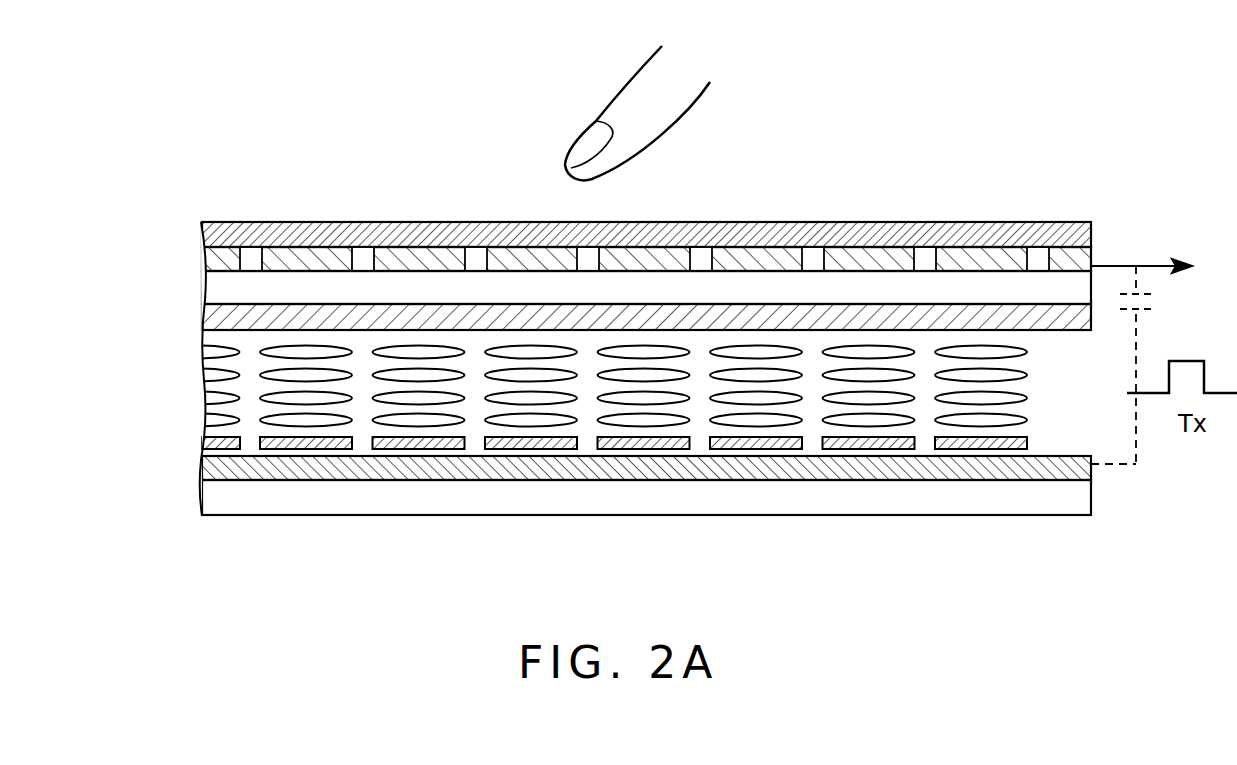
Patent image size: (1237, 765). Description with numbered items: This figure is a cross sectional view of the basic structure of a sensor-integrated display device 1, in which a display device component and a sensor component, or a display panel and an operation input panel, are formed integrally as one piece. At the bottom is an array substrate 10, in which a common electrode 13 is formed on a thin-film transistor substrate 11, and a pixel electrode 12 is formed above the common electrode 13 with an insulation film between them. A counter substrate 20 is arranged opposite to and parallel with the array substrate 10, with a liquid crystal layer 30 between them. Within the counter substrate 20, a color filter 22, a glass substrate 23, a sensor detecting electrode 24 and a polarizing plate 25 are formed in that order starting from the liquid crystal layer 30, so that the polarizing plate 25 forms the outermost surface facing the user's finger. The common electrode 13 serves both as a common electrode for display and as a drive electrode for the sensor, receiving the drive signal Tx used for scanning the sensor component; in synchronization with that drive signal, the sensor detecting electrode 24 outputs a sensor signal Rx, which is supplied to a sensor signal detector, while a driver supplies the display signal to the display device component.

The display device with touch detection function 1 is at (449, 163).
The array substrate 10 is at (585, 473).
The thin-film transistor (TFT) substrate 11 is at (614, 499).
The pixel electrode 12 is at (204, 447).
The common electrode 13 is at (204, 477).
The counter substrate 20 is at (585, 275).
The color filter 22 is at (614, 319).
The glass substrate 23 is at (206, 293).
The sensor detecting electrode 24 is at (202, 265).
The polarizing plate 25 is at (202, 236).
The liquid crystal layer 30 is at (195, 345).